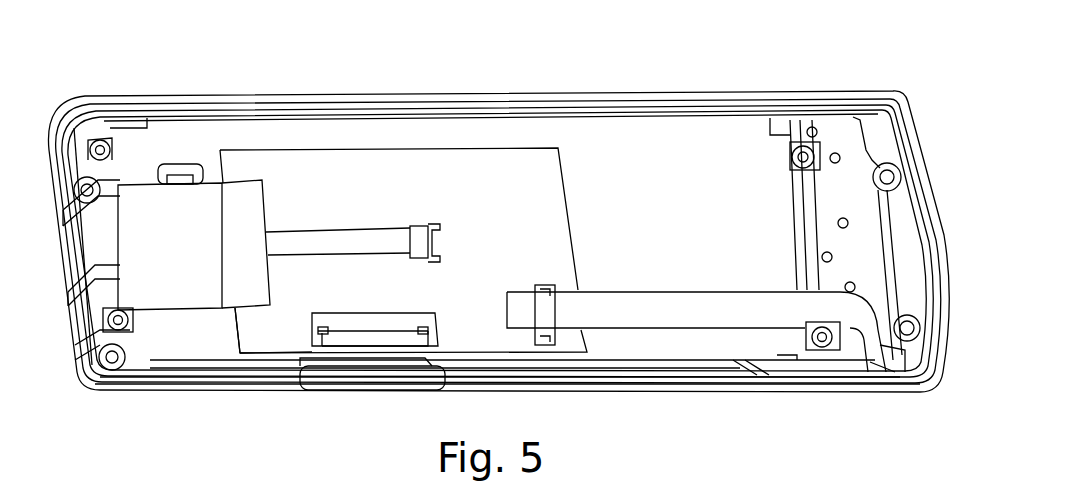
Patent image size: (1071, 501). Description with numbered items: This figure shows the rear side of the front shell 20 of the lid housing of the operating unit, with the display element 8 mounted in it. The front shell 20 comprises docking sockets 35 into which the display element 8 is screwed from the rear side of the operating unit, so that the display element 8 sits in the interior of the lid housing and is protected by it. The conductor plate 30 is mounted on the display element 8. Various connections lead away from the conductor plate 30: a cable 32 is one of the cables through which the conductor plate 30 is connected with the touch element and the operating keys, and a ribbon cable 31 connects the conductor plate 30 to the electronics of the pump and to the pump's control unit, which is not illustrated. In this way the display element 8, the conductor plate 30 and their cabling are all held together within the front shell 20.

The front shell 20 is at (910, 74).
The display element 8 is at (643, 172).
The conductor plate 30 is at (287, 315).
The ribbon cable 31 is at (378, 380).
The cable 32 is at (203, 288).
The docking socket 35 is at (88, 135).